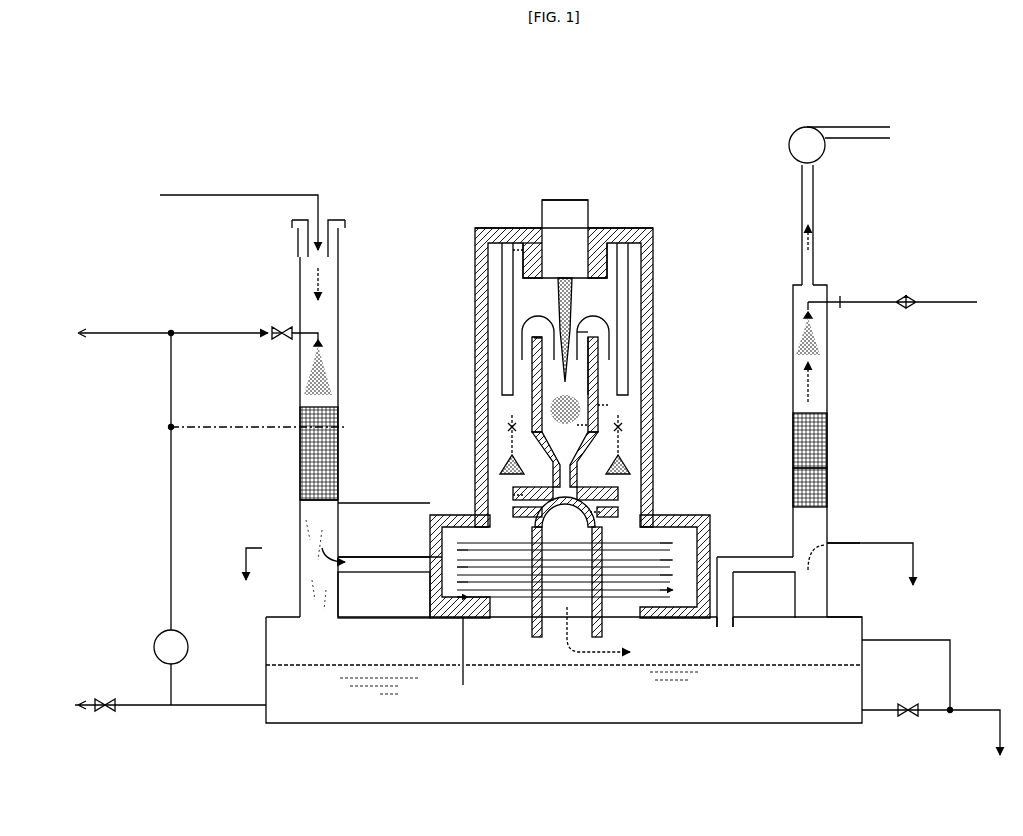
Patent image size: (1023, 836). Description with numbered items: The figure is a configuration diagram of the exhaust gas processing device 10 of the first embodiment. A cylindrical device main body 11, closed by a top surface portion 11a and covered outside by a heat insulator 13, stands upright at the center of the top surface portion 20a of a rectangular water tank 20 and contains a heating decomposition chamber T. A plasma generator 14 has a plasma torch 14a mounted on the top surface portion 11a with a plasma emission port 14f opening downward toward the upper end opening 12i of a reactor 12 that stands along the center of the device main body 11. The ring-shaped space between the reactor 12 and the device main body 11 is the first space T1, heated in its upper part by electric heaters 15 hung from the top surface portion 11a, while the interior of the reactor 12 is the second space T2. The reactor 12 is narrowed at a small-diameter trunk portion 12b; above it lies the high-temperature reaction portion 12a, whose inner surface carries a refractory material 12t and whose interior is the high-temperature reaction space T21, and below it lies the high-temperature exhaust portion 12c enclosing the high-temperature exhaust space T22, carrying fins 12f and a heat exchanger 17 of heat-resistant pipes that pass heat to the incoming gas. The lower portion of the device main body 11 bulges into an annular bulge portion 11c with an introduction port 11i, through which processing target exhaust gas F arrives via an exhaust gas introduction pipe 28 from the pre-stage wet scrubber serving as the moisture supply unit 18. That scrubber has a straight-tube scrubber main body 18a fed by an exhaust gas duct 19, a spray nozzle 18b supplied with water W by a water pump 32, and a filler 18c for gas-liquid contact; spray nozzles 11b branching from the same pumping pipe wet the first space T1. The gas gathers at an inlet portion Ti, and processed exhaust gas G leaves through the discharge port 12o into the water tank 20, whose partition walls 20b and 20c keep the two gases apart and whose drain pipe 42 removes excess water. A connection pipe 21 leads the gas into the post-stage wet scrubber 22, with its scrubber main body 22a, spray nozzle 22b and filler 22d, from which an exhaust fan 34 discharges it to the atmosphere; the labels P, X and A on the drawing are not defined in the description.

The exhaust gas processing device 10 is at (450, 182).
The device main body 11 is at (559, 350).
The top surface portion 11a is at (622, 228).
The spray nozzles 11b is at (641, 462).
The annular bulge portion 11c is at (436, 520).
The introduction port 11i is at (430, 556).
The reactor 12 is at (558, 400).
The high-temperature reaction portion 12a is at (597, 392).
The small-diameter trunk portion 12b is at (503, 467).
The high-temperature exhaust portion 12c is at (530, 622).
The fins 12f is at (620, 492).
The upper end opening 12i is at (607, 335).
The discharge port 12o is at (536, 636).
The refractory material 12t is at (545, 352).
The heat insulator 13 is at (528, 336).
The plasma generator 14 is at (576, 212).
The plasma torch 14a is at (562, 212).
The plasma emission port 14f is at (560, 270).
The electric heaters 15 is at (505, 263).
The heat exchanger 17 is at (606, 590).
The moisture supply unit 18 is at (211, 418).
The scrubber main body 18a is at (298, 442).
The spray nozzle 18b is at (300, 330).
The filler 18c is at (298, 484).
The exhaust gas duct 19 is at (240, 183).
The water tank 20 is at (578, 690).
The top surface portion 20a is at (847, 614).
The partition wall 20b is at (463, 688).
The partition wall 20c is at (753, 672).
The connection pipe 21 is at (738, 556).
The post-stage wet scrubber 22 is at (885, 391).
The scrubber main body 22a is at (828, 398).
The spray nozzle 22b is at (827, 300).
The filler 22d is at (828, 460).
The exhaust gas introduction pipe 28 is at (384, 595).
The water pump 32 is at (178, 629).
The exhaust fan 34 is at (818, 148).
The drain pipe 42 is at (900, 640).
The heating decomposition chamber T is at (480, 252).
The first space T1 is at (616, 412).
The second space T2 is at (592, 430).
The high-temperature reaction space T21 is at (545, 343).
The high-temperature exhaust space T22 is at (598, 517).
The inlet portion Ti is at (513, 494).
The plasma / pump P is at (578, 305).
The water W is at (596, 706).
The processing target exhaust gas F is at (320, 552).
The processed exhaust gas G is at (832, 545).
The discharge X is at (581, 558).
The air supply A is at (951, 302).